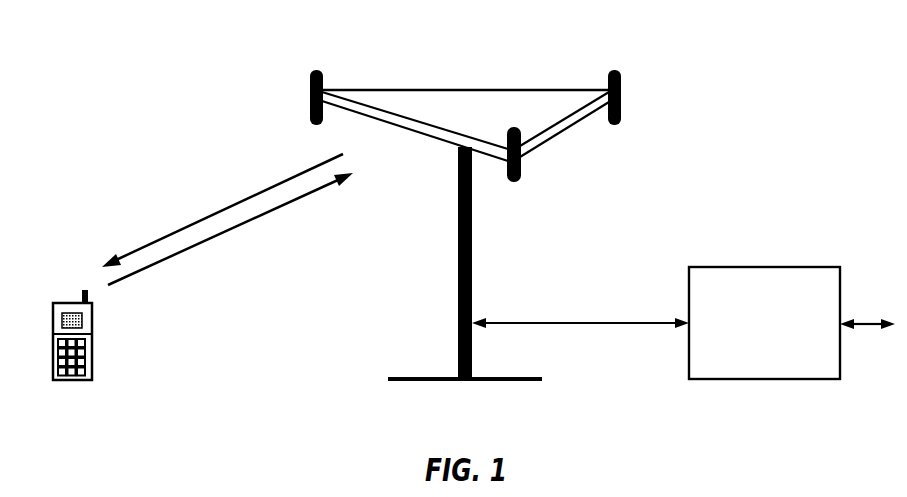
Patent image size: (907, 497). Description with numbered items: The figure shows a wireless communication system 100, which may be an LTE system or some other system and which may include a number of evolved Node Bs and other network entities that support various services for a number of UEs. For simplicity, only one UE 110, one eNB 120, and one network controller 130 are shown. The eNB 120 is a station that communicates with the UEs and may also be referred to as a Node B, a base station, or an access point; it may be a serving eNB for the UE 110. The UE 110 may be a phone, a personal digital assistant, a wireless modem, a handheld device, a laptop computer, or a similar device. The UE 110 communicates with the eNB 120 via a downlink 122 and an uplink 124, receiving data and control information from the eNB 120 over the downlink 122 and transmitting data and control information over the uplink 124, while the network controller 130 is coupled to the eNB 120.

The wireless communication system 100 is at (45, 76).
The UE 110 is at (64, 303).
The eNB 120 is at (460, 90).
The downlink 122 is at (216, 212).
The uplink 124 is at (249, 221).
The network controller 130 is at (759, 266).